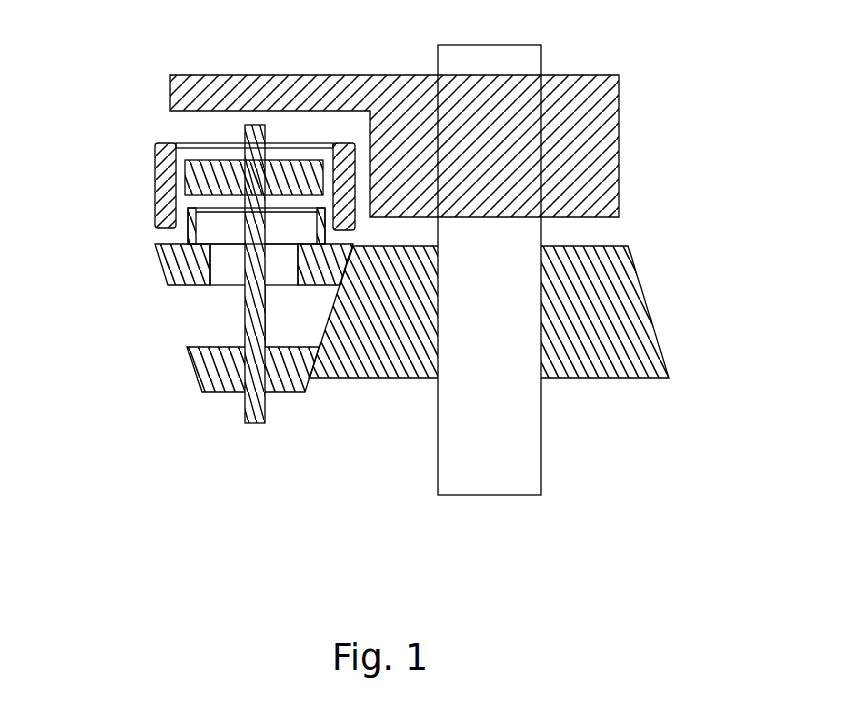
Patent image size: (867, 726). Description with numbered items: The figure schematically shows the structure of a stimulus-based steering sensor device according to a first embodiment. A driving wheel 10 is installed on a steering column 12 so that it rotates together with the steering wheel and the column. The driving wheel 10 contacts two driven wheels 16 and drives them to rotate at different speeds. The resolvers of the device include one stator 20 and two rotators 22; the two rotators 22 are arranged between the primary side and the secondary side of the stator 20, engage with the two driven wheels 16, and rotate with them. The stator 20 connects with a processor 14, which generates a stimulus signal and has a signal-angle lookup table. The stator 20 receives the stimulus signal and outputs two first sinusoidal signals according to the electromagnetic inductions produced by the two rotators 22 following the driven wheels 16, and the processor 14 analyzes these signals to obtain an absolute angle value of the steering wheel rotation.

The driving wheel 10 is at (632, 307).
The steering column 12 is at (528, 465).
The processor 14 is at (606, 116).
The driven wheel 16 is at (173, 270).
The stator 20 is at (158, 192).
The rotator 22 is at (193, 168).